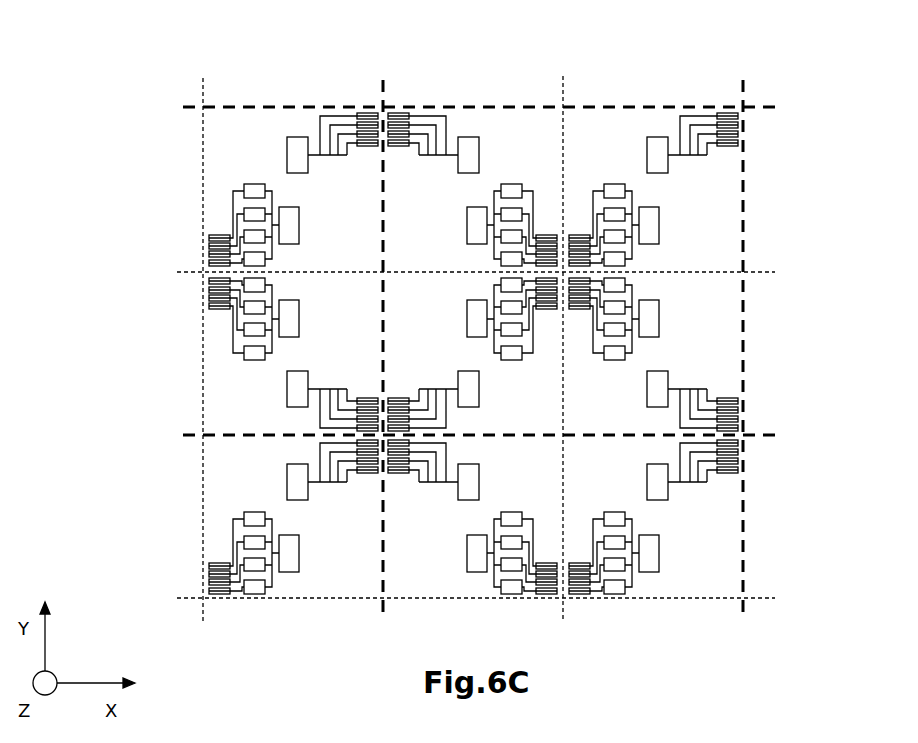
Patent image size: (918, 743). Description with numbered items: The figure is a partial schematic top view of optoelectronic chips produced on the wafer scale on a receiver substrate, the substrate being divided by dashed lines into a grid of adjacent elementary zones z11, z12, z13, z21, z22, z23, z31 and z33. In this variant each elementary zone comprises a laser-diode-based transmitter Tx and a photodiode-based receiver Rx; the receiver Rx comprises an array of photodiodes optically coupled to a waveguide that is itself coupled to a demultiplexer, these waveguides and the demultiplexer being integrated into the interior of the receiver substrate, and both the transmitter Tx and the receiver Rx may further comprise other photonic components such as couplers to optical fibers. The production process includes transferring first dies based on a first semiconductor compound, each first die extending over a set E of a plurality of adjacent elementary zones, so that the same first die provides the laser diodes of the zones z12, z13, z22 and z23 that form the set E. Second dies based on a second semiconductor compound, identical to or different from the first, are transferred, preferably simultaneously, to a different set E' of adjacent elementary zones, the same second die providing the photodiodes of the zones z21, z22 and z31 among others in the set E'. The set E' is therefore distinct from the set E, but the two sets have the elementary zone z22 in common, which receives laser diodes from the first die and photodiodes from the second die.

The elementary zone z11 is at (242, 124).
The elementary zone z12 is at (526, 124).
The elementary zone z13 is at (603, 122).
The elementary zone z21 is at (224, 385).
The elementary zone z22 is at (433, 304).
The elementary zone z23 is at (710, 307).
The elementary zone z31 is at (222, 489).
The elementary zone z33 is at (720, 540).
The set of adjacent elementary zones E is at (522, 343).
The set of adjacent elementary zones E' is at (431, 349).
The transmitter Tx is at (684, 231).
The receiver Rx is at (260, 418).